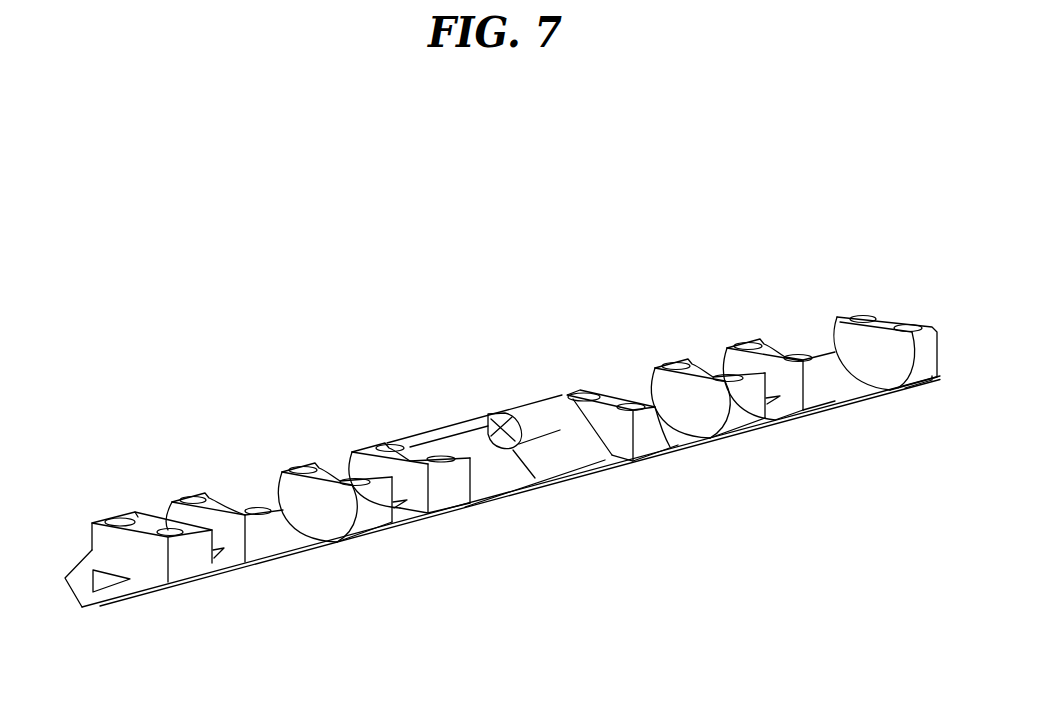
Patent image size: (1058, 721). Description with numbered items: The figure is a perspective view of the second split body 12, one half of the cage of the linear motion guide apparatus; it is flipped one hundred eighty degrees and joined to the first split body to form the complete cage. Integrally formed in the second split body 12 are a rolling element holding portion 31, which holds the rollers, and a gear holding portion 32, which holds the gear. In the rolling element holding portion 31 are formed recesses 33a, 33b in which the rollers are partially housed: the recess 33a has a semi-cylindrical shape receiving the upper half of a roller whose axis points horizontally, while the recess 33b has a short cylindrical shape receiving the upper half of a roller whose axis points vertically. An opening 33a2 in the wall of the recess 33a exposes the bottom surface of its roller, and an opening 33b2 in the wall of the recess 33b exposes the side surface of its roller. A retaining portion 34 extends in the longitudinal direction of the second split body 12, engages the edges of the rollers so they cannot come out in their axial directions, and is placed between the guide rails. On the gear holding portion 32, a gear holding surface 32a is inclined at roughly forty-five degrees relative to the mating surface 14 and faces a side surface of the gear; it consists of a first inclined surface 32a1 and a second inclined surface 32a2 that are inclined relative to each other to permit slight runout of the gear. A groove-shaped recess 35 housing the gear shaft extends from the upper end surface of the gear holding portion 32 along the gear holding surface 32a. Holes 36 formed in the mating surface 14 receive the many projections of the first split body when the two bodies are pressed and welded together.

The second split body 12 is at (342, 288).
The mating surface 14 is at (143, 540).
The rolling element holding portion 31 is at (293, 461).
The gear holding portion 32 is at (447, 417).
The gear holding surface 32a is at (571, 495).
The first inclined surface 32a1 is at (576, 452).
The second inclined surface 32a2 is at (488, 470).
The recess 33a is at (885, 357).
The opening 33a2 is at (918, 366).
The recess 33b is at (779, 383).
The opening 33b2 is at (807, 392).
The retaining portion 34 is at (78, 587).
The recess 35 is at (518, 432).
The holes 36 is at (167, 525).